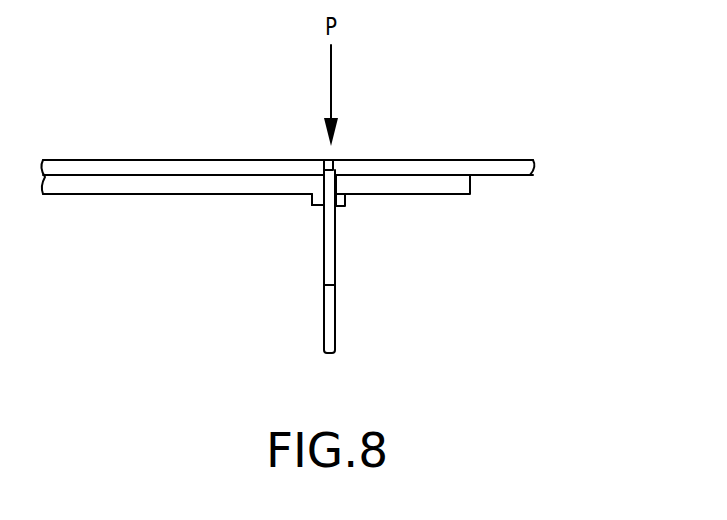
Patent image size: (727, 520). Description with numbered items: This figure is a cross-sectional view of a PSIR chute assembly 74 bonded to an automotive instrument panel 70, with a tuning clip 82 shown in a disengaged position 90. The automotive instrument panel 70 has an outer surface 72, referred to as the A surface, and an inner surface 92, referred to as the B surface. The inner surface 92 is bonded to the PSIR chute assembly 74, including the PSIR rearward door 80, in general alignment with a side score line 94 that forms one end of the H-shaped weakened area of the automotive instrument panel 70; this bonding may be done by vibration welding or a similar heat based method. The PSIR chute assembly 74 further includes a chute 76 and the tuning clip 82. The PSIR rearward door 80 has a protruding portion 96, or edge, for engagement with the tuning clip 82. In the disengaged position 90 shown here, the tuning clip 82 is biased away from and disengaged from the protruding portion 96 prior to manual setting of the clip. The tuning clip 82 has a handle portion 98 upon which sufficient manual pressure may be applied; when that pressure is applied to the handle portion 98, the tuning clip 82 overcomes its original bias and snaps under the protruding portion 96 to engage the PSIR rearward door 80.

The automotive instrument panel 70 is at (530, 130).
The outer surface 72 is at (226, 160).
The PSIR chute assembly 74 is at (298, 311).
The chute 76 is at (335, 312).
The PSIR rearward door 80 is at (218, 194).
The tuning clip 82 is at (323, 262).
The disengaged position 90 is at (303, 222).
The inner surface 92 is at (520, 175).
The side score line 94 is at (337, 158).
The protruding portion 96 is at (318, 201).
The handle portion 98 is at (334, 202).